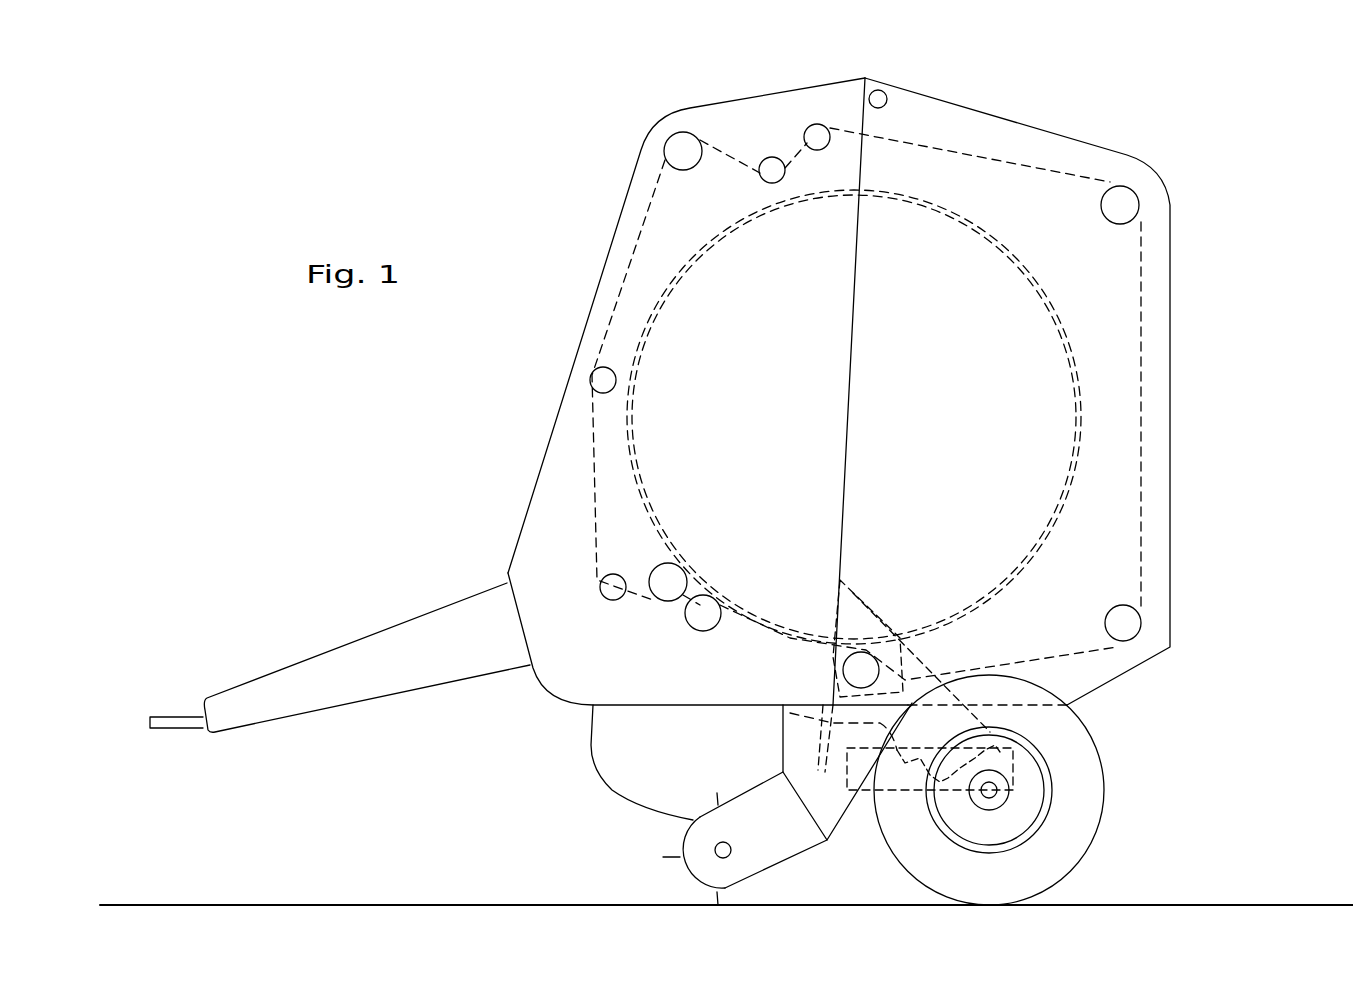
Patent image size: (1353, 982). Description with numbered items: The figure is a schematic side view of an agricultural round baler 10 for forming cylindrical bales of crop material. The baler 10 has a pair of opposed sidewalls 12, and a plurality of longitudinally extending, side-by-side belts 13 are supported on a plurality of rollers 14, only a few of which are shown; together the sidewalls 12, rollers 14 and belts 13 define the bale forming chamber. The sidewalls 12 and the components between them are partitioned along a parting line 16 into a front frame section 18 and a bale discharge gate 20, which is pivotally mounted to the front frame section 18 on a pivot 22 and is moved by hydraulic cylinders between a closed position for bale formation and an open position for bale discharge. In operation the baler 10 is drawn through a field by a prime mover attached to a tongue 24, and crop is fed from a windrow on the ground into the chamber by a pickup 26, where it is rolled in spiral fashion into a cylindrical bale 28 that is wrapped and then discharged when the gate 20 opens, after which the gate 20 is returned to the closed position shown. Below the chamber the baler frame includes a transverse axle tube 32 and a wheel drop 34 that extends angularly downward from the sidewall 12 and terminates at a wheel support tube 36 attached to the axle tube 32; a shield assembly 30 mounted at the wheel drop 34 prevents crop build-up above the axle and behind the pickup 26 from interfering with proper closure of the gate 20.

The agricultural baler 10 is at (1226, 165).
The sidewalls 12 is at (1106, 554).
The belts 13 is at (987, 157).
The rollers 14 is at (813, 133).
The parting line 16 is at (851, 364).
The front frame section 18 is at (534, 497).
The bale discharge gate 20 is at (1170, 422).
The pivot 22 is at (886, 100).
The tongue 24 is at (350, 650).
The pickup 26 is at (697, 849).
The cylindrical bale 28 is at (790, 640).
The shield assembly 30 is at (927, 667).
The axle tube 32 is at (927, 753).
The wheel drop 34 is at (826, 760).
The wheel support tube 36 is at (1017, 765).